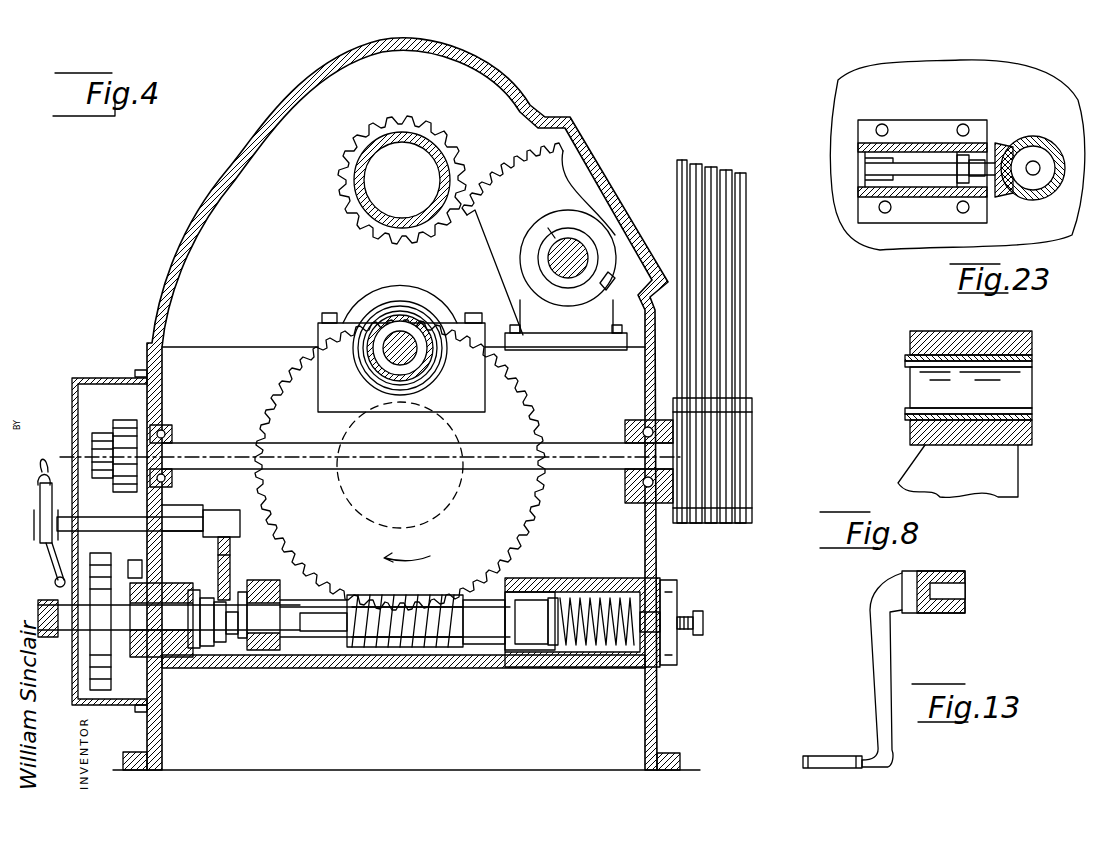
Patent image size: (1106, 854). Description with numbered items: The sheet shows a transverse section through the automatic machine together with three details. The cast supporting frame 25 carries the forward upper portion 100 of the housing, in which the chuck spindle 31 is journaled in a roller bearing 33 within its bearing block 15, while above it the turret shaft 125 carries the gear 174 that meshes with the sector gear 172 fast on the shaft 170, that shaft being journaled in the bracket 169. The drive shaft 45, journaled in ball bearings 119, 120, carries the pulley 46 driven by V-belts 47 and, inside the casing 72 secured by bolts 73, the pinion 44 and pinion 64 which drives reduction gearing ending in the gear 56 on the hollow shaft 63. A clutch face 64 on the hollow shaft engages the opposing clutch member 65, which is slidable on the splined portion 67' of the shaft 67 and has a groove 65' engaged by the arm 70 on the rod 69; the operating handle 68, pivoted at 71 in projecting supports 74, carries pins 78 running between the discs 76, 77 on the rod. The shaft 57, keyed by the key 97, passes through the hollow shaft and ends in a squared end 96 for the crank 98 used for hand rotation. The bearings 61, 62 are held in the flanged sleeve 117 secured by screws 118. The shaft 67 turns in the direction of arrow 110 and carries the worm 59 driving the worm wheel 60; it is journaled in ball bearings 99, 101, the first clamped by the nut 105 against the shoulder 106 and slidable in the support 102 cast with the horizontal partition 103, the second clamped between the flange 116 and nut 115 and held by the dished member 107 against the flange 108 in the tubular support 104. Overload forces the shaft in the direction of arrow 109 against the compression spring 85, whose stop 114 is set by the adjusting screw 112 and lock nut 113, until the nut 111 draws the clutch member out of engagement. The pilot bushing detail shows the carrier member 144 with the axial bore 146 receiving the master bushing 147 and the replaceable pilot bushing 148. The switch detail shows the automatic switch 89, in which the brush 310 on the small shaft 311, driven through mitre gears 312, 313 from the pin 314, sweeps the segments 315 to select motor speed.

In FIG. 4, the upper portion of the housing 100 is at (522, 100).
In FIG. 4, the turret shaft 125 is at (388, 132).
In FIG. 4, the gear 174 is at (346, 202).
In FIG. 4, the sector gear 172 is at (500, 236).
In FIG. 4, the shaft 170 is at (575, 258).
In FIG. 4, the bracket 169 is at (532, 308).
In FIG. 4, the roller bearing 33 is at (410, 330).
In FIG. 4, the bearing block 15 is at (380, 337).
In FIG. 4, the shaft 31 is at (367, 355).
In FIG. 4, the V-belts 47 is at (750, 312).
In FIG. 4, the drive shaft 45 is at (572, 440).
In FIG. 4, the pulley 46 is at (752, 470).
In FIG. 4, the ball bearing 120 is at (625, 482).
In FIG. 4, the casing 72 is at (95, 378).
In FIG. 4, the bolts 73 is at (140, 370).
In FIG. 4, the pinion / clutch face 64 is at (100, 433).
In FIG. 4, the pinion 44 is at (125, 420).
In FIG. 4, the ball bearing 119 is at (172, 440).
In FIG. 4, the operating handle 68 is at (46, 462).
In FIG. 4, the pins or dogs 78 is at (54, 483).
In FIG. 4, the disc 76 is at (38, 512).
In FIG. 4, the disc 77 is at (62, 526).
In FIG. 4, the projecting supports 74 is at (46, 562).
In FIG. 4, the pivot 71 is at (55, 582).
In FIG. 4, the rod 69 is at (178, 520).
In FIG. 4, the flanged sleeve 117 is at (208, 514).
In FIG. 4, the gear 56 is at (125, 562).
In FIG. 4, the screws 118 is at (143, 585).
In FIG. 4, the arm 70 is at (218, 562).
In FIG. 4, the shaft 57 is at (165, 600).
In FIG. 4, the splined portion 67' is at (249, 593).
In FIG. 4, the bearing support 102 is at (270, 580).
In FIG. 4, the double ball bearing 99 is at (282, 601).
In FIG. 4, the nut 105 is at (290, 618).
In FIG. 4, the shoulder 106 is at (272, 640).
In FIG. 4, the squared end 96 is at (50, 637).
In FIG. 4, the bearing 61 is at (112, 662).
In FIG. 4, the bearing 62 is at (192, 650).
In FIG. 4, the hollow shaft 63 is at (178, 660).
In FIG. 4, the clutch member 65 is at (242, 657).
In FIG. 4, the key 97 is at (256, 660).
In FIG. 4, the nut 111 is at (220, 660).
In FIG. 4, the groove 65' is at (246, 706).
In FIG. 4, the shaft 67 is at (323, 666).
In FIG. 4, the horizontal partition 103 is at (375, 670).
In FIG. 4, the worm 59 is at (430, 650).
In FIG. 4, the arrow 110 is at (456, 650).
In FIG. 4, the flange 108 is at (498, 650).
In FIG. 4, the arrow 109 is at (490, 628).
In FIG. 4, the worm wheel 60 is at (512, 522).
In FIG. 4, the tubular support 104 is at (586, 578).
In FIG. 4, the compression spring 85 is at (612, 596).
In FIG. 4, the nut / cap 115 is at (548, 598).
In FIG. 4, the flange / machine screws 116 is at (680, 580).
In FIG. 4, the adjusting screw 112 is at (704, 620).
In FIG. 4, the lock nut 113 is at (682, 632).
In FIG. 4, the dished member 107 is at (560, 667).
In FIG. 4, the stop 114 is at (635, 660).
In FIG. 4, the supporting frame 25 is at (657, 707).
In FIG. 23, the supporting frame 25 is at (870, 92).
In FIG. 4, the double ball bearing 101 is at (505, 594).
In FIG. 23, the automatic switch 89 is at (924, 143).
In FIG. 23, the rotatable brush 310 is at (940, 140).
In FIG. 23, the mitre gear 313 is at (1003, 145).
In FIG. 23, the mitre gear 312 is at (1033, 145).
In FIG. 23, the small shaft 311 is at (918, 168).
In FIG. 23, the segments 315 is at (953, 200).
In FIG. 23, the pin 314 is at (1036, 174).
In FIG. 8, the axial bore 146 is at (1026, 388).
In FIG. 8, the pilot bushing 148 is at (1034, 410).
In FIG. 8, the master bushing 147 is at (1034, 418).
In FIG. 8, the carrier member 144 is at (1034, 440).
In FIG. 13, the crank 98 is at (878, 656).